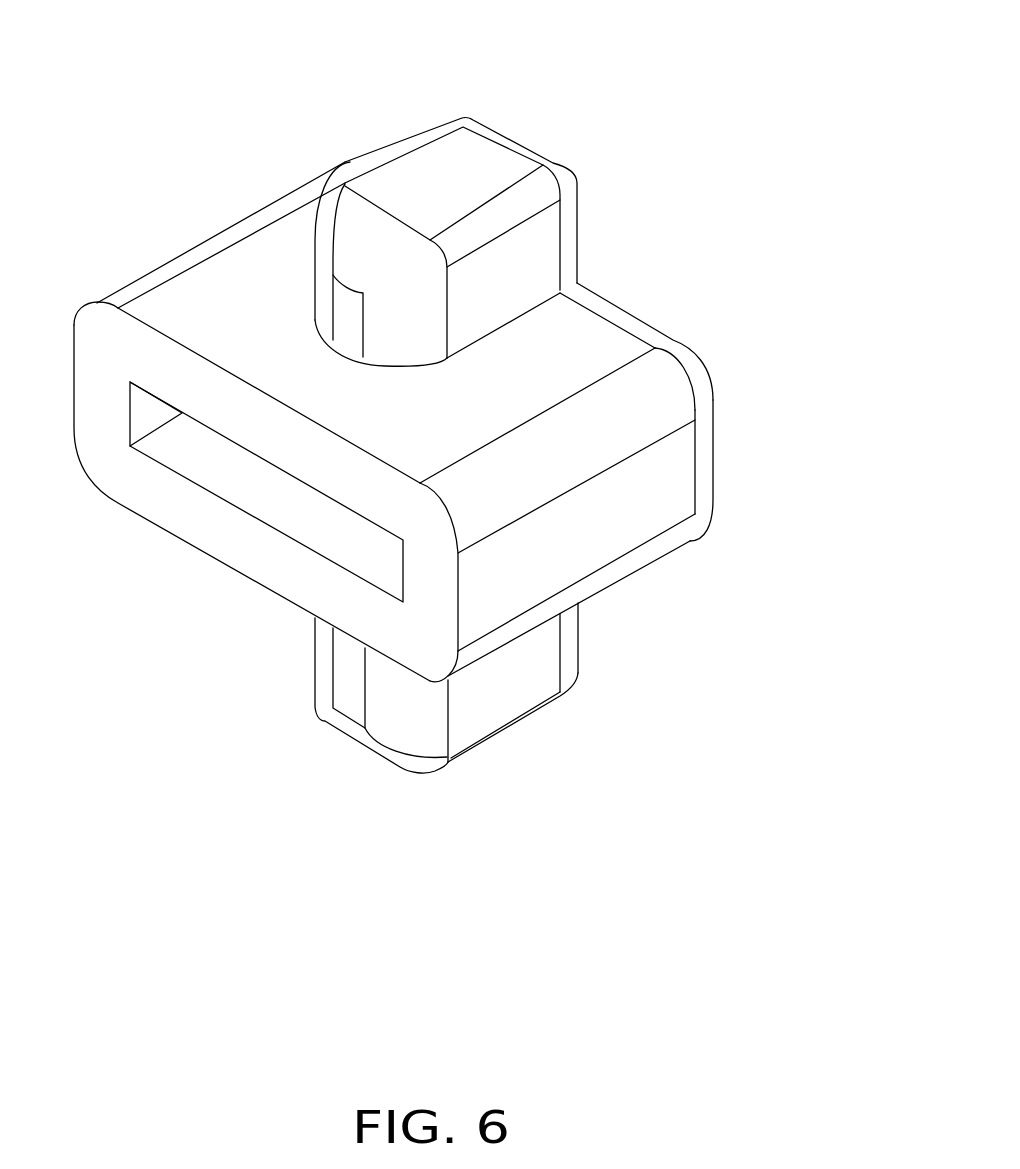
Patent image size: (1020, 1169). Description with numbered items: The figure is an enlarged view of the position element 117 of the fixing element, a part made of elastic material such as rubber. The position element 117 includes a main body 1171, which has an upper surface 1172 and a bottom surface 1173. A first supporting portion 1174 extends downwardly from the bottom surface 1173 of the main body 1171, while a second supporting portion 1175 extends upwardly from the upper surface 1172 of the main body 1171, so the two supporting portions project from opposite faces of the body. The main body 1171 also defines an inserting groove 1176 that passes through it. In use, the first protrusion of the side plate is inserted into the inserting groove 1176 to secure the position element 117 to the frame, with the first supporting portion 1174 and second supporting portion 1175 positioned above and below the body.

The position element 117 is at (596, 70).
The main body 1171 is at (662, 477).
The upper surface 1172 is at (200, 287).
The bottom surface 1173 is at (264, 596).
The first supporting portion 1174 is at (520, 687).
The second supporting portion 1175 is at (535, 247).
The inserting groove 1176 is at (222, 480).